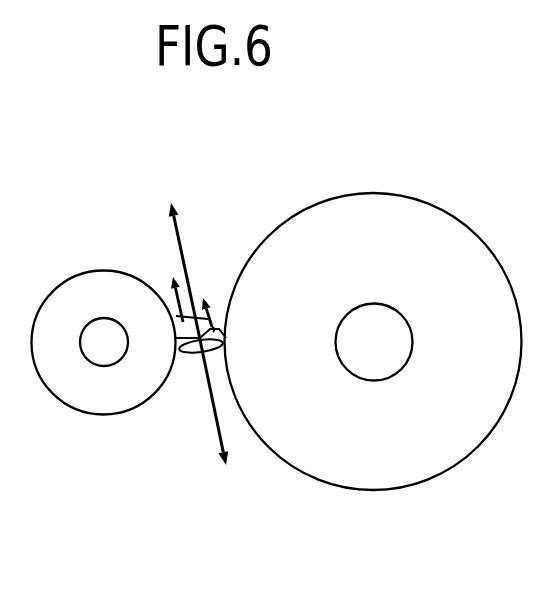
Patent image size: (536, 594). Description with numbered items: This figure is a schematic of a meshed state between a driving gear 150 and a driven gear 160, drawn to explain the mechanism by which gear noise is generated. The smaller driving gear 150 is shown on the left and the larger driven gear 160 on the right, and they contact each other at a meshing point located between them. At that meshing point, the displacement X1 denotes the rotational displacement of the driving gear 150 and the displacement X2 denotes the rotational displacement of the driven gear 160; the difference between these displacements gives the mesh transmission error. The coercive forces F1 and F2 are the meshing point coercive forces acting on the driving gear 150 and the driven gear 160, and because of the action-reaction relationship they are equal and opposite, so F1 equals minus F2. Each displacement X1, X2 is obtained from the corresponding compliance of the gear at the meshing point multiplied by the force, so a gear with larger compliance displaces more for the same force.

The driving gear 150 is at (85, 382).
The driven gear 160 is at (412, 448).
The coercive force F1 is at (177, 255).
The coercive force F2 is at (220, 412).
The displacement X1 is at (168, 287).
The displacement X2 is at (209, 301).